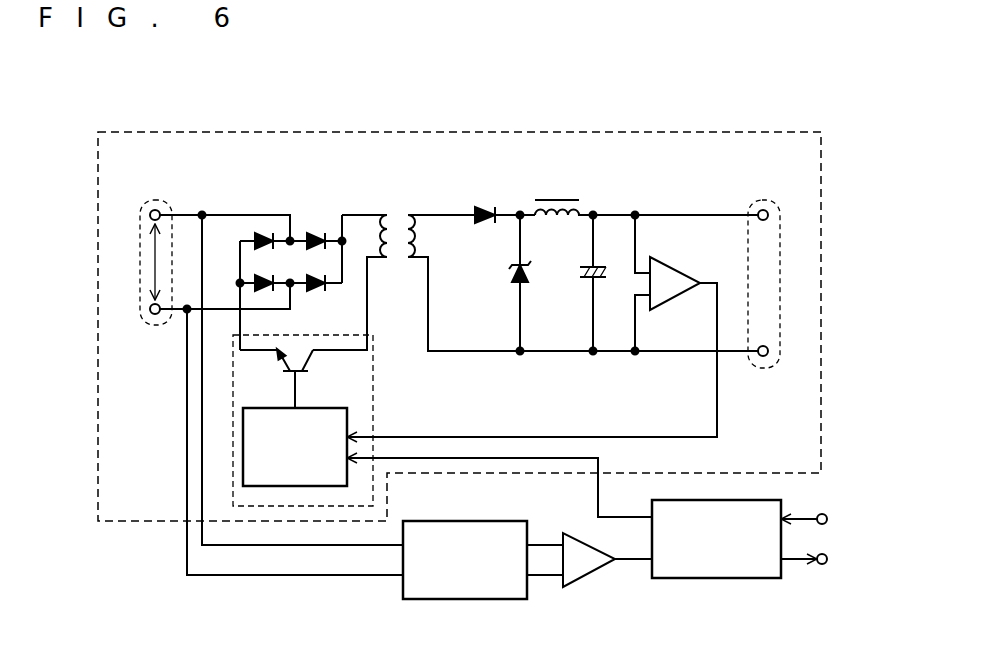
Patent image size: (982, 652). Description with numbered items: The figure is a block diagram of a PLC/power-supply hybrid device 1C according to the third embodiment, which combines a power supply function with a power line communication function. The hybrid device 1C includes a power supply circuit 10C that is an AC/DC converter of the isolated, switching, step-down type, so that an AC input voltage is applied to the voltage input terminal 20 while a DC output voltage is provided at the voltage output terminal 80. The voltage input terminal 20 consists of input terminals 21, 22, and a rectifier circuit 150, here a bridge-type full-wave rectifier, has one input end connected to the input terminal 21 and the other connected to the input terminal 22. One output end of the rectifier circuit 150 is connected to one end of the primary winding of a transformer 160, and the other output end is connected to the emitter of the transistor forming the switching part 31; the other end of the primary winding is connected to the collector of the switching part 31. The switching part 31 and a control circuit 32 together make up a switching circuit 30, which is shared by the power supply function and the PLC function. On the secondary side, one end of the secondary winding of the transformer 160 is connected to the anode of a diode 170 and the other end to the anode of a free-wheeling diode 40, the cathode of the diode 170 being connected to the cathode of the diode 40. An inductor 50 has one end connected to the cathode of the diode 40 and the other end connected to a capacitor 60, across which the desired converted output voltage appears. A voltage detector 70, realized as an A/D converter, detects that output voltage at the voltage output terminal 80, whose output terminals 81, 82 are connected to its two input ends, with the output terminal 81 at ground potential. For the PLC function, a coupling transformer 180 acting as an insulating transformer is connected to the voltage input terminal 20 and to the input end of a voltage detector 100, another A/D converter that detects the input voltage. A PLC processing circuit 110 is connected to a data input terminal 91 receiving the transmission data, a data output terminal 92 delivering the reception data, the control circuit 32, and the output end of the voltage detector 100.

The PLC/power-supply hybrid device 1C is at (152, 106).
The power supply circuit 10C is at (303, 132).
The voltage input terminal 20 is at (158, 200).
The input terminal 21 is at (148, 314).
The input terminal 22 is at (149, 211).
The switching circuit 30 is at (373, 383).
The switching part 31 is at (275, 361).
The control circuit 32 is at (308, 408).
The diode 40 is at (512, 274).
The inductor 50 is at (556, 198).
The capacitor 60 is at (580, 274).
The voltage detector 70 is at (665, 262).
The voltage output terminal 80 is at (766, 200).
The output terminal 81 is at (770, 353).
The output terminal 82 is at (769, 211).
The data input terminal 91 is at (824, 513).
The data output terminal 92 is at (824, 566).
The voltage detector 100 is at (580, 582).
The PLC processing circuit 110 is at (706, 579).
The rectifier circuit 150 is at (307, 214).
The transformer 160 is at (398, 212).
The diode 170 is at (483, 203).
The coupling transformer 180 is at (438, 521).